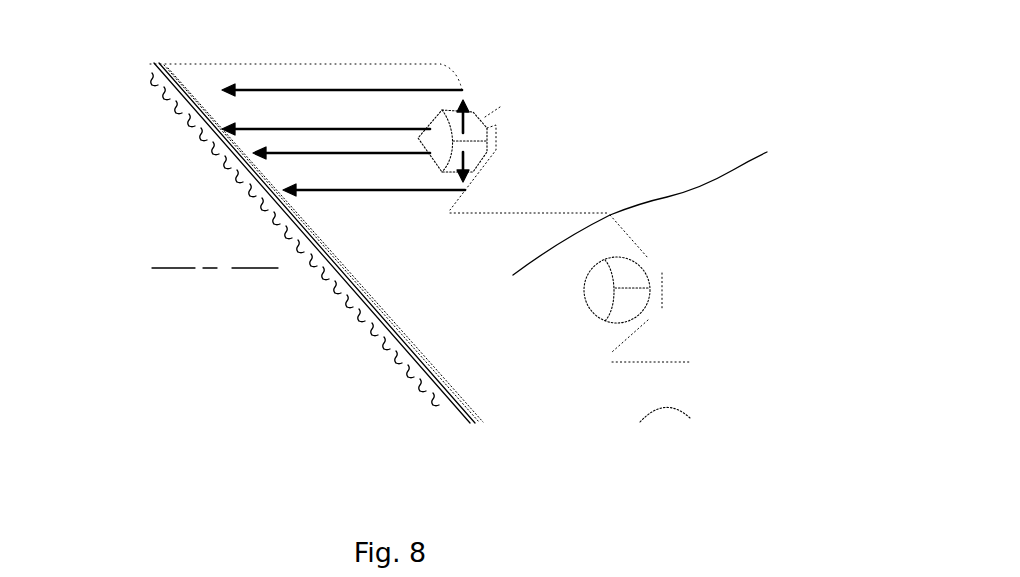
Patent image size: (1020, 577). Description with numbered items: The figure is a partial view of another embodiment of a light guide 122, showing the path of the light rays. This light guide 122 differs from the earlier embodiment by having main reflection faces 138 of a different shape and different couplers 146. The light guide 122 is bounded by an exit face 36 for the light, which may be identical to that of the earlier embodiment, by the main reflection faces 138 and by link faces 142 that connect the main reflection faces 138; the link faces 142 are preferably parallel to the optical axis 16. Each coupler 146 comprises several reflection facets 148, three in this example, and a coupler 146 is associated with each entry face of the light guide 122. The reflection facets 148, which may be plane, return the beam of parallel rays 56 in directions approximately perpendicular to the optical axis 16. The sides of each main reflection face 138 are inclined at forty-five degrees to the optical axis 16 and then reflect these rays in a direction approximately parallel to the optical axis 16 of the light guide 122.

The optical axis 16 is at (177, 268).
The exit face 36 is at (191, 147).
The beam of parallel rays 56 is at (352, 126).
The light guide 122 is at (651, 198).
The main reflection face 138 is at (488, 110).
The link face 142 is at (533, 213).
The coupler 146 is at (487, 130).
The reflection facet 148 is at (471, 130).